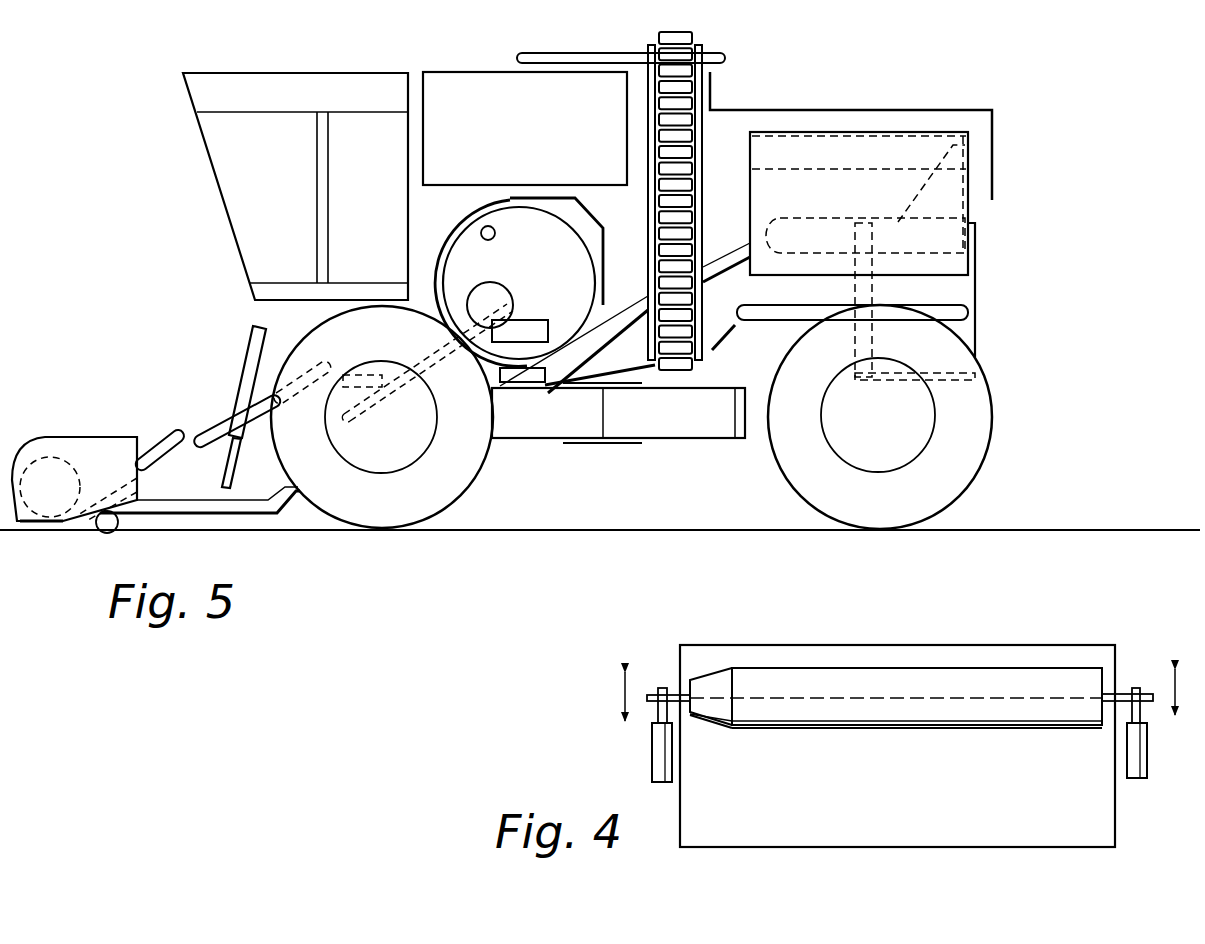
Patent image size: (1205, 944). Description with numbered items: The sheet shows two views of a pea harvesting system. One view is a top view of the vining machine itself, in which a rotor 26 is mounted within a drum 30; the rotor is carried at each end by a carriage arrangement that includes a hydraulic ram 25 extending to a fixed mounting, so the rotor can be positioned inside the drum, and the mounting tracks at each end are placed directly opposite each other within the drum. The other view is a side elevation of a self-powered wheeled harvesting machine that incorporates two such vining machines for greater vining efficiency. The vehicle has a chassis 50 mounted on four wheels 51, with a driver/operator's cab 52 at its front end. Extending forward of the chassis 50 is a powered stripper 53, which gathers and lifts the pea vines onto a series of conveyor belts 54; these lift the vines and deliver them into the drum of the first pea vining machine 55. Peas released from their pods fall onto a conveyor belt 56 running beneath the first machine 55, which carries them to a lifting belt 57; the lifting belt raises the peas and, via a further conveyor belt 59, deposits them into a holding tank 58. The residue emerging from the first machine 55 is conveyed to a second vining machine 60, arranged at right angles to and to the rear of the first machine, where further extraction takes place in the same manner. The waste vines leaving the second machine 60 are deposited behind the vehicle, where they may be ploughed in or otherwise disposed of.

In FIG. 4, the hydraulic ram 25 is at (650, 752).
In FIG. 4, the rotor 26 is at (830, 667).
In FIG. 4, the drum 30 is at (932, 645).
In FIG. 5, the chassis 50 is at (510, 421).
In FIG. 5, the wheels 51 is at (455, 490).
In FIG. 5, the driver/operator's cab 52 is at (222, 146).
In FIG. 5, the powered stripper 53 is at (53, 420).
In FIG. 5, the conveyor belts 54 is at (400, 346).
In FIG. 5, the first pea vining machine 55 is at (468, 362).
In FIG. 5, the conveyor belt 56 is at (527, 383).
In FIG. 5, the lifting belt 57 is at (675, 370).
In FIG. 5, the holding tank 58 is at (448, 87).
In FIG. 5, the further conveyor belt 59 is at (592, 54).
In FIG. 5, the second vining machine 60 is at (855, 146).